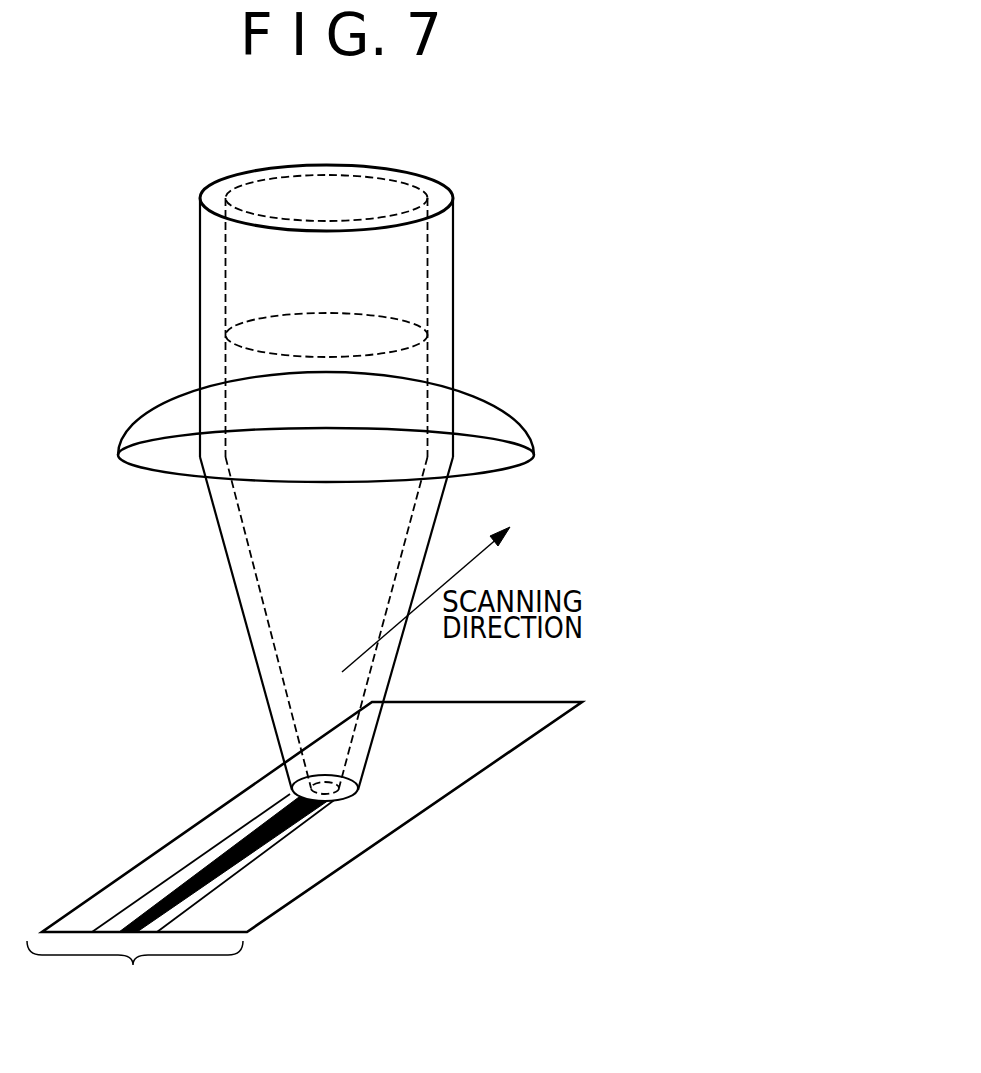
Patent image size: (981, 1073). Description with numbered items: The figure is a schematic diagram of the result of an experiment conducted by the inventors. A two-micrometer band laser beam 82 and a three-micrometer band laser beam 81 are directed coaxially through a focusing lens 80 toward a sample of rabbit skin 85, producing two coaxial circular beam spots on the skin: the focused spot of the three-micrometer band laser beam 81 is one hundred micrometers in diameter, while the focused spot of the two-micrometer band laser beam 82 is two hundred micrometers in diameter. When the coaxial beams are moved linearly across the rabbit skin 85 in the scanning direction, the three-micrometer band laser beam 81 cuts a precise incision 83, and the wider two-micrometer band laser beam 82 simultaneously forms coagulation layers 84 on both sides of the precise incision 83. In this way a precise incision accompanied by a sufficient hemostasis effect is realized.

The focusing lens 80 is at (477, 427).
The 3 μm band laser beam 81 is at (380, 323).
The 2 μm band laser beam 82 is at (420, 182).
The precise incision 83 is at (268, 829).
The coagulation layers 84 is at (245, 867).
The rabbit skin 85 is at (304, 863).